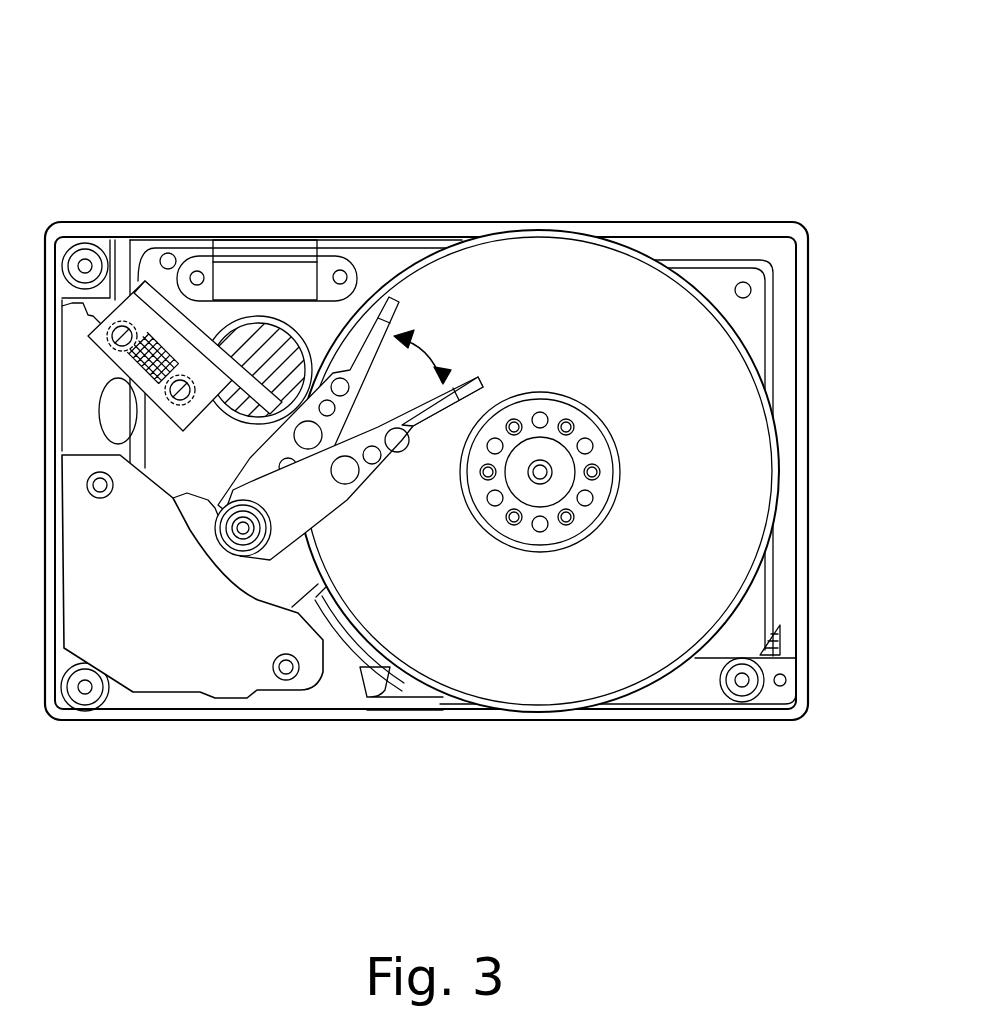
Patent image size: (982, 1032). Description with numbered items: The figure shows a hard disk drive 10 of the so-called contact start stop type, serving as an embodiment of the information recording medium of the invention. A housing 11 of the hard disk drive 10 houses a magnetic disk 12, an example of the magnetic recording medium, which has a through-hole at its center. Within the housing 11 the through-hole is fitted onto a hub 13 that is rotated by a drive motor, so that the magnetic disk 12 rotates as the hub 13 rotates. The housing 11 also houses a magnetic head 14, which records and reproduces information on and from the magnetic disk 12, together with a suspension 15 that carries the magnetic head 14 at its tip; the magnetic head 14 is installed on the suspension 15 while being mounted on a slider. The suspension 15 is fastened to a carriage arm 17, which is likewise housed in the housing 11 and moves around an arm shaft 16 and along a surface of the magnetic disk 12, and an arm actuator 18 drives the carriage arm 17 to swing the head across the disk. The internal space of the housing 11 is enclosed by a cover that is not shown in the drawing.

The hard disk drive 10 is at (737, 100).
The housing 11 is at (650, 222).
The magnetic disk 12 is at (740, 460).
The hub 13 is at (605, 495).
The magnetic head 14 is at (458, 386).
The suspension 15 is at (423, 420).
The arm shaft 16 is at (243, 535).
The carriage arm 17 is at (333, 498).
The arm actuator 18 is at (153, 680).